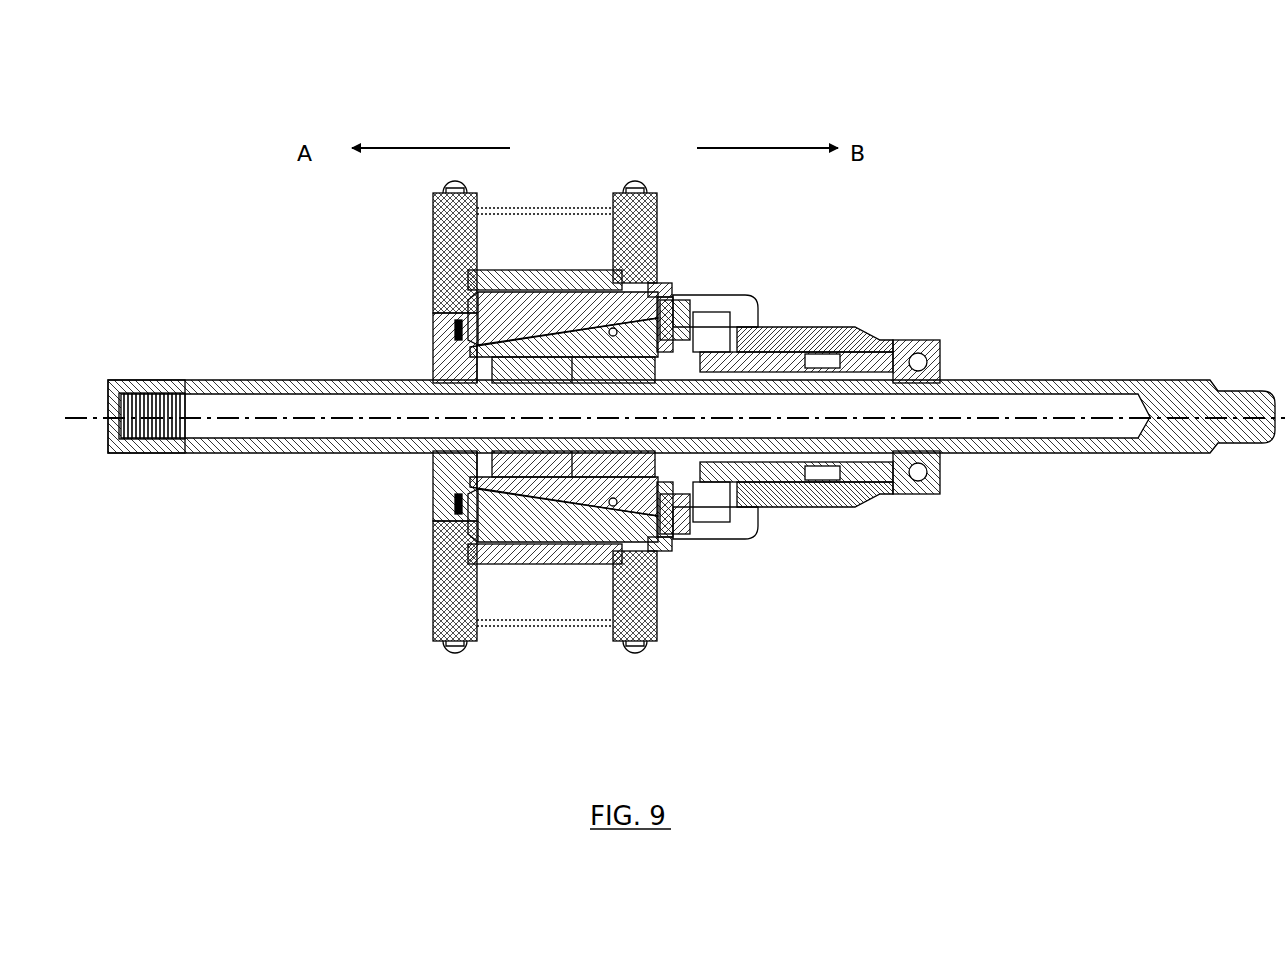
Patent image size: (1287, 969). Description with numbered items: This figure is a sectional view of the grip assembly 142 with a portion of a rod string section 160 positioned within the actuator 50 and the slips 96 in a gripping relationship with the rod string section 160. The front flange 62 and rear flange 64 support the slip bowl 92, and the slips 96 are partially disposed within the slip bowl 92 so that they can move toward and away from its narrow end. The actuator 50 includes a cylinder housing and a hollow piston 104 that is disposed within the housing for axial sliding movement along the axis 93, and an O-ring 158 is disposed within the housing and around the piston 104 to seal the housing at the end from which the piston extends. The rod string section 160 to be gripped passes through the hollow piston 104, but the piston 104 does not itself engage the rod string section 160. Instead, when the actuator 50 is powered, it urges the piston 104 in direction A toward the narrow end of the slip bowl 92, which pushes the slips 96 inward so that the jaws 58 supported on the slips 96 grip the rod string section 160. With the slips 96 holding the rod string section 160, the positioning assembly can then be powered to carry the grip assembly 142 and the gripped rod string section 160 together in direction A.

The grip assembly 142 is at (571, 118).
The front flange 62 is at (444, 235).
The rear flange 64 is at (657, 232).
The slips 96 is at (553, 348).
The jaws 58 is at (550, 478).
The slip bowl 92 is at (463, 515).
The actuator 50 is at (859, 322).
The O-ring 158 is at (738, 480).
The piston 104 is at (795, 480).
The axis 93 is at (308, 418).
The rod string section 160 is at (200, 442).